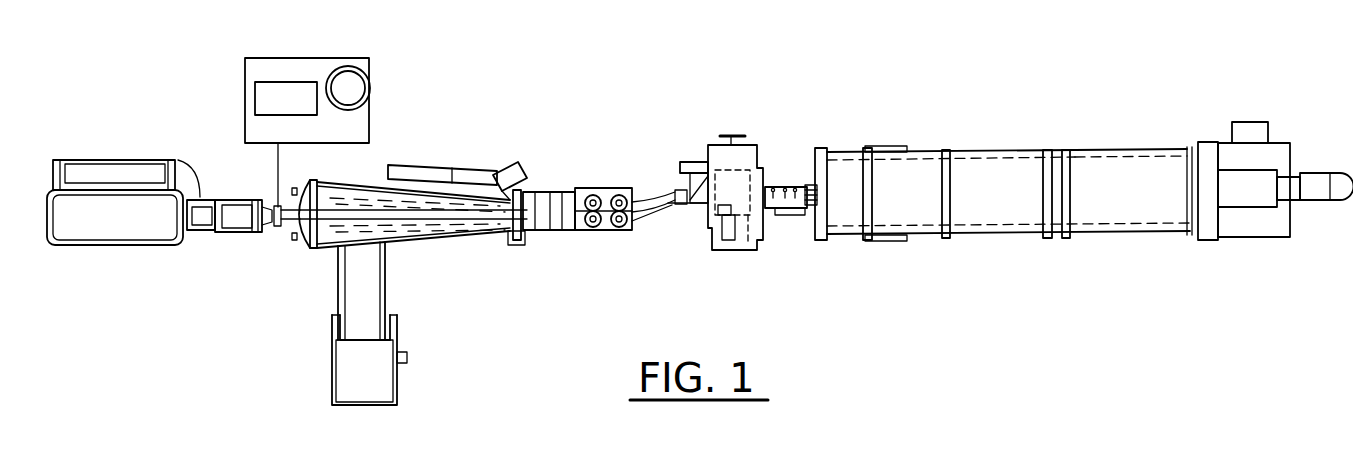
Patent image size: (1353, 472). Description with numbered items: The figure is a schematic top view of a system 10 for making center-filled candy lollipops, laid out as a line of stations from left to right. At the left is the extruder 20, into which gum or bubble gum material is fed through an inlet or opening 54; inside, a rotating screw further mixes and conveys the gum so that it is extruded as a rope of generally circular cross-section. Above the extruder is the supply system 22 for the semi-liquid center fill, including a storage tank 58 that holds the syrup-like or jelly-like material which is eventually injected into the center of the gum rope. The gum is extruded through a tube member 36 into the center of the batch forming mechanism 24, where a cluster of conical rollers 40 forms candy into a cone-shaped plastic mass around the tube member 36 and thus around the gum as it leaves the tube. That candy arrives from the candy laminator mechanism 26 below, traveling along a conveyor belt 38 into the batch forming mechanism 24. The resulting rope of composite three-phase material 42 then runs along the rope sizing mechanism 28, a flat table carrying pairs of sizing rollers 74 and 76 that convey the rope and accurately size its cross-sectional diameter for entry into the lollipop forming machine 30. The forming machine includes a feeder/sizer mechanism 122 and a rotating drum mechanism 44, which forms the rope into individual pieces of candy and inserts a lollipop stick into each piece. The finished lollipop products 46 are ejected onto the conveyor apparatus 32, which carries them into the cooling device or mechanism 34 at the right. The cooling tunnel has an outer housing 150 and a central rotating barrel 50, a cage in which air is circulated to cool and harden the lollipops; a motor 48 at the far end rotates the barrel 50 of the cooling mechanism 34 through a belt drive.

The system 10 is at (192, 337).
The extruder 20 is at (133, 247).
The inlet or opening 54 is at (205, 230).
The tube member 36 is at (287, 222).
The supply system 22 is at (353, 60).
The storage tank 58 is at (358, 85).
The batch forming mechanism 24 is at (417, 240).
The conical rollers 40 is at (362, 178).
The conveyor belt 38 is at (348, 278).
The candy laminator mechanism 26 is at (330, 362).
The rope sizing mechanism 28 is at (585, 186).
The sizing rollers 74 is at (590, 228).
The composite three-phase material 42 is at (608, 228).
The sizing rollers 76 is at (620, 230).
The feeder/sizer mechanism 122 is at (690, 160).
The lollipop forming machine 30 is at (750, 145).
The rotating drum mechanism 44 is at (748, 250).
The conveyor apparatus 32 is at (790, 212).
The lollipop products 46 is at (786, 185).
The cooling device or mechanism 34 is at (980, 235).
The rotating barrel 50 is at (988, 152).
The outer housing 150 is at (1112, 150).
The motor 48 is at (1208, 150).